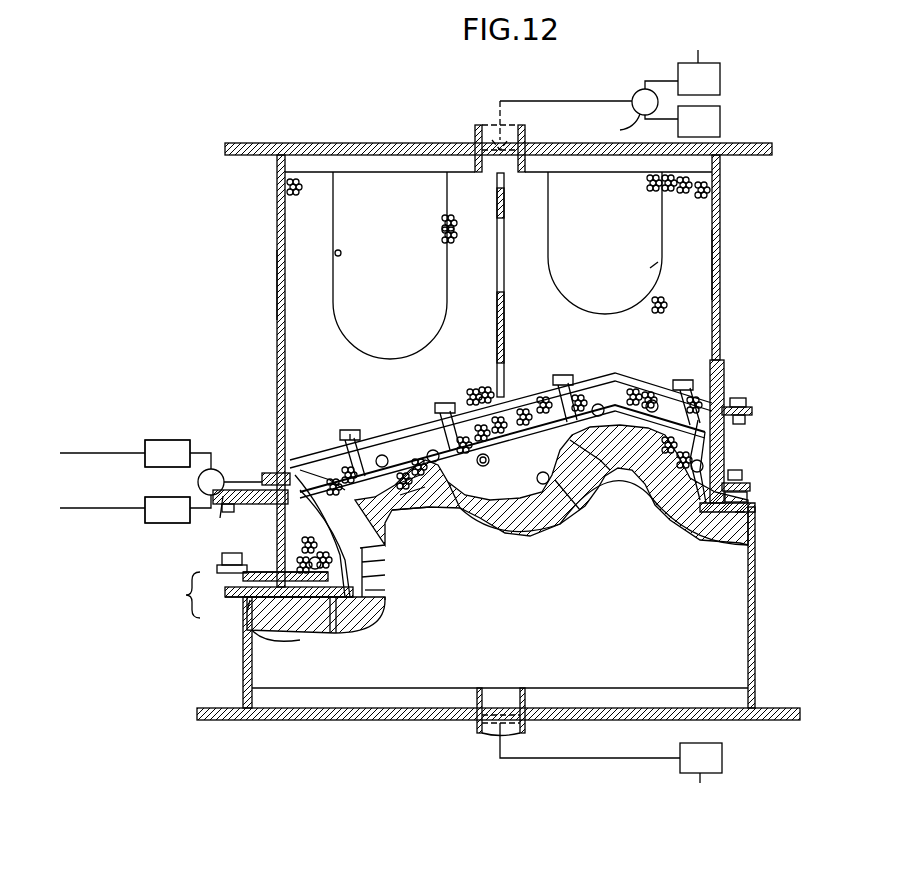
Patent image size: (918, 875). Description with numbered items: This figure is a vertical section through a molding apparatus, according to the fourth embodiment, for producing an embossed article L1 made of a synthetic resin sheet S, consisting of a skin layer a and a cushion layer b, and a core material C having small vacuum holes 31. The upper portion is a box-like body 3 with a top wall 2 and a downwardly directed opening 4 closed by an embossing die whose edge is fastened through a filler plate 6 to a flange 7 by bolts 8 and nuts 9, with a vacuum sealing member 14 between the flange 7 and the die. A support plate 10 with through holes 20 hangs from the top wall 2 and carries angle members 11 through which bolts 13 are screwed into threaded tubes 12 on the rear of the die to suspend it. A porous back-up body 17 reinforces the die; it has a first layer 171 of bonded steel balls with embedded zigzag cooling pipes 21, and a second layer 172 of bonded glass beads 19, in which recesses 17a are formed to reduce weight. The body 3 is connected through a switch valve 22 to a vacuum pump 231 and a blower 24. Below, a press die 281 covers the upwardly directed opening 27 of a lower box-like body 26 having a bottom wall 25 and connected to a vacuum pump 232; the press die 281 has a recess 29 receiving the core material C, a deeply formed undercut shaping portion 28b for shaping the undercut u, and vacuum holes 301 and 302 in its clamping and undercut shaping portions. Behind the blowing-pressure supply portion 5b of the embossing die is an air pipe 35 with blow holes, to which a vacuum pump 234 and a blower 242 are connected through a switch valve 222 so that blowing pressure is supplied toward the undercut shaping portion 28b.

The top wall 2 is at (348, 143).
The box-like body 3 is at (277, 286).
The downwardly directed opening 4 is at (262, 590).
The blowing-pressure supply portion 5b is at (386, 558).
The filler plate 6 is at (750, 498).
The flange 7 is at (245, 578).
The bolts 8 is at (247, 606).
The nuts 9 is at (745, 470).
The support plate 10 is at (504, 308).
The angle members 11 is at (267, 339).
The threaded tubes 12 is at (777, 596).
The bolts 13 is at (350, 428).
The vacuum sealing member 14 is at (322, 536).
The porous back-up body 17 is at (693, 203).
The recesses 17a is at (335, 242).
The first layer 171 is at (588, 404).
The second layer 172 is at (690, 328).
The glass beads 19 is at (468, 398).
The through holes 20 is at (504, 266).
The cooling pipes 21 is at (390, 463).
The switch valve 22 is at (638, 92).
The switch valve 222 is at (222, 474).
The vacuum pump 231 is at (720, 79).
The vacuum pump 232 is at (722, 763).
The vacuum pump 234 is at (162, 440).
The blower 24 is at (720, 123).
The blower 242 is at (165, 523).
The bottom wall 25 is at (639, 720).
The box-like body 26 is at (243, 656).
The upwardly directed opening 27 is at (276, 639).
The press die 281 is at (445, 508).
The undercut shaping portion 28b is at (386, 580).
The recess 29 is at (456, 520).
The vacuum holes 301 is at (445, 520).
The vacuum holes 302 is at (386, 595).
The vacuum holes 31 is at (551, 485).
The air pipe 35 is at (333, 458).
The core material C is at (490, 466).
The embossed article L1 is at (545, 515).
The synthetic resin sheet S is at (264, 595).
The skin layer a is at (243, 578).
The cushion layer b is at (236, 594).
The undercut u is at (411, 522).